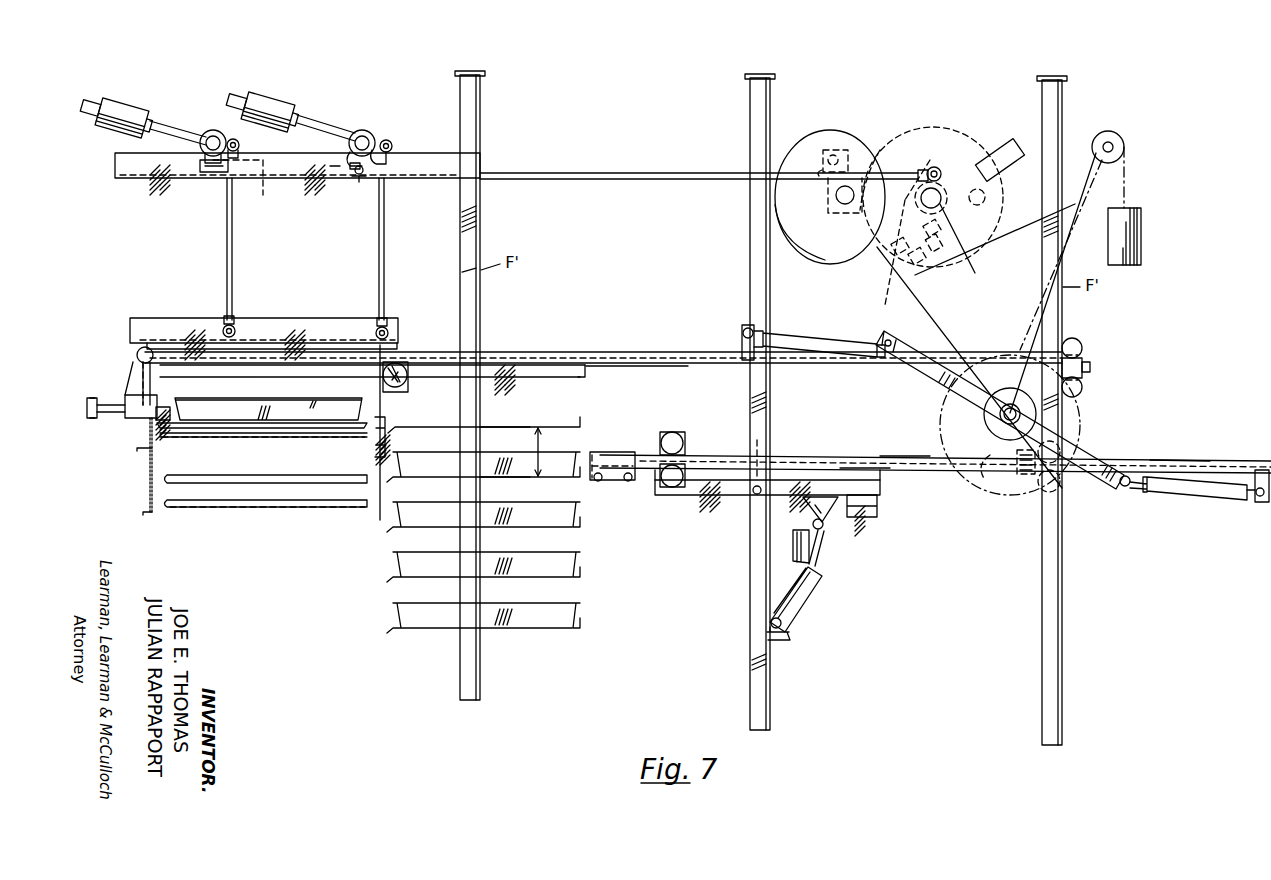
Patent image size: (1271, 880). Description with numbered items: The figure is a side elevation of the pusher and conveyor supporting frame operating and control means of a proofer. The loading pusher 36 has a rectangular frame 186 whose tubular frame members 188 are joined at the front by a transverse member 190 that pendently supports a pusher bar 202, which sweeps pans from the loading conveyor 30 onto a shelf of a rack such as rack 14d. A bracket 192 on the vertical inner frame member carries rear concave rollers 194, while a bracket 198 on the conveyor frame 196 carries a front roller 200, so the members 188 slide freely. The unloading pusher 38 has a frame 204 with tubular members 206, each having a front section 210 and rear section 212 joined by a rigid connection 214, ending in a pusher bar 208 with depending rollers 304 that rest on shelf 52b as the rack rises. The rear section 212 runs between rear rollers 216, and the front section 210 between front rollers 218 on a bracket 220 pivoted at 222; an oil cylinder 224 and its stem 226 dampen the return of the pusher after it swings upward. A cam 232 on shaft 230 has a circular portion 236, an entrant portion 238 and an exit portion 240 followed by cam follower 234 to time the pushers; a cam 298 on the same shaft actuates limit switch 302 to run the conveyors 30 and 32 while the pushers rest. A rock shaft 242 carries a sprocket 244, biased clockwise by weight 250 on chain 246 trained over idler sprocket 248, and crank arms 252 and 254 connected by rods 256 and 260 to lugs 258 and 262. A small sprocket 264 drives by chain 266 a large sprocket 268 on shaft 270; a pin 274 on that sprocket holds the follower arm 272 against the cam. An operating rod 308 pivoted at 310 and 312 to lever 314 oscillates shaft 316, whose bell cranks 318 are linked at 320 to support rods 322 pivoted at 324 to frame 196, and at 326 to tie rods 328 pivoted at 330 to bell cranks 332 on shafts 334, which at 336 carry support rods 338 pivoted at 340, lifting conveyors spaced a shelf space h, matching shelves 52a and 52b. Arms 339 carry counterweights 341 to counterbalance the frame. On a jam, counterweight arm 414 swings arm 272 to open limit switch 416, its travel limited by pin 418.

The rack 14d is at (572, 544).
The loading conveyor 30 is at (268, 425).
The unloading conveyor 32 is at (298, 478).
The loading pusher 36 is at (675, 354).
The unloading pusher 38 is at (709, 454).
The rack shelf 52a is at (505, 426).
The rack shelf 52b is at (516, 478).
The shelf space h is at (540, 452).
The rectangular frame 186 is at (645, 351).
The tubular frame members 188 is at (687, 368).
The transverse tubular frame member 190 is at (137, 356).
The bracket 192 is at (1078, 341).
The rear concave rollers 194 is at (1083, 349).
The rectangular frame 196 is at (143, 477).
The bracket 198 is at (407, 388).
The front concave roller 200 is at (404, 366).
The pusher bar 202 is at (182, 401).
The rectangular frame 204 is at (904, 455).
The tubular frame members 206 is at (860, 455).
The pusher bar 208 is at (606, 452).
The front section 210 is at (769, 456).
The rear section 212 is at (1178, 458).
The rigid connection 214 is at (1018, 478).
The rear concave rollers 216 is at (1055, 449).
The front concave rollers 218 is at (683, 441).
The bracket 220 is at (737, 495).
The pivot 222 is at (762, 488).
The oil cylinder 224 is at (800, 603).
The stem 226 is at (816, 546).
The transverse shaft 230 is at (845, 205).
The cam 232 is at (805, 143).
The cam follower 234 is at (895, 252).
The circular peripheral portion 236 is at (795, 237).
The perimetrical entrant portion 238 is at (885, 188).
The perimetrical exit portion 240 is at (862, 171).
The rock shaft 242 is at (1004, 426).
The sprocket 244 is at (1027, 486).
The chain 246 is at (1096, 136).
The idler sprocket 248 is at (1120, 155).
The operating weight 250 is at (1142, 216).
The crank arm 252 is at (932, 373).
The crank arm 254 is at (1093, 458).
The connecting rod 256 is at (824, 341).
The lug 258 is at (740, 331).
The connecting rod 260 is at (1178, 494).
The lug 262 is at (1250, 481).
The small sprocket 264 is at (1010, 392).
The chain 266 is at (925, 318).
The large sprocket 268 is at (1011, 233).
The transverse shaft 270 is at (967, 248).
The arm 272 is at (930, 160).
The pin 274 is at (893, 300).
The cam 298 is at (828, 201).
The limit switch 302 is at (850, 150).
The depending rollers 304 is at (624, 481).
The operating rod 308 is at (625, 172).
The pivotal connection 310 is at (938, 170).
The pivotal connection 312 is at (358, 181).
The short lever 314 is at (346, 170).
The transverse through shaft 316 is at (362, 130).
The bell crank 318 is at (376, 136).
The pivotal connection 320 is at (392, 142).
The depending support rod 322 is at (386, 258).
The pivotal connection 324 is at (389, 327).
The pivotal connection 326 is at (345, 135).
The tie rod 328 is at (266, 180).
The pivotal connection 330 is at (207, 170).
The bell crank 332 is at (222, 150).
The short transverse shaft 334 is at (205, 133).
The pivotal connection 336 is at (234, 138).
The depending support rod 338 is at (226, 256).
The forwardly extending arm 339 is at (152, 129).
The pivotal connection 340 is at (224, 326).
The counterweight 341 is at (170, 108).
The counterweight arm 414 is at (1005, 148).
The limit switch 416 is at (935, 240).
The pin 418 is at (986, 197).